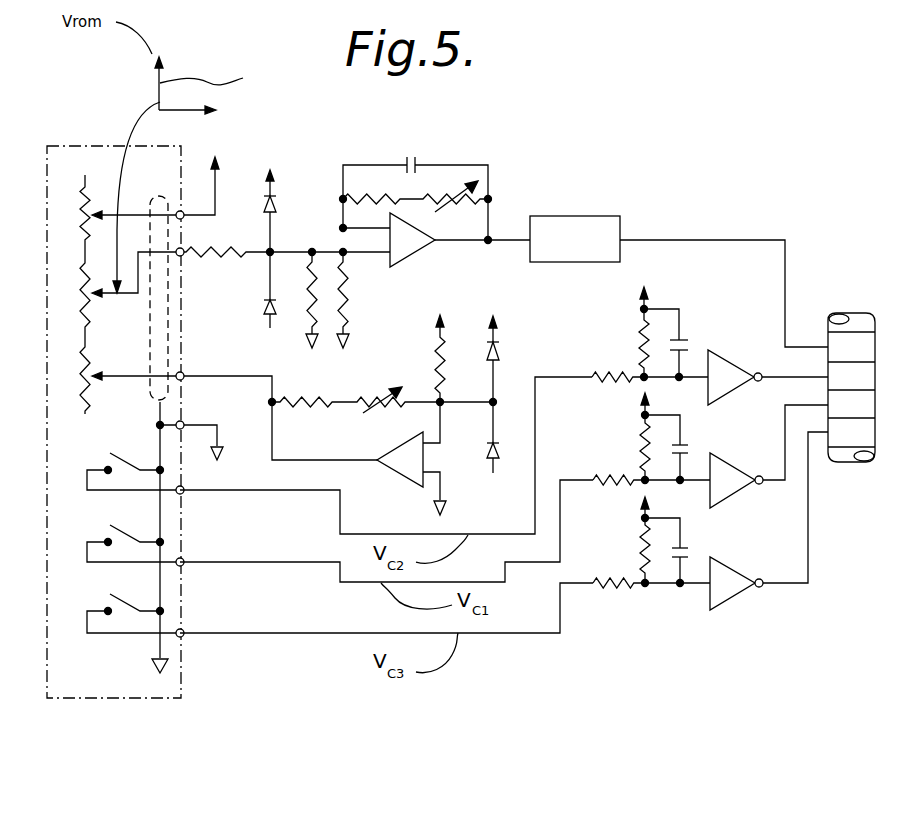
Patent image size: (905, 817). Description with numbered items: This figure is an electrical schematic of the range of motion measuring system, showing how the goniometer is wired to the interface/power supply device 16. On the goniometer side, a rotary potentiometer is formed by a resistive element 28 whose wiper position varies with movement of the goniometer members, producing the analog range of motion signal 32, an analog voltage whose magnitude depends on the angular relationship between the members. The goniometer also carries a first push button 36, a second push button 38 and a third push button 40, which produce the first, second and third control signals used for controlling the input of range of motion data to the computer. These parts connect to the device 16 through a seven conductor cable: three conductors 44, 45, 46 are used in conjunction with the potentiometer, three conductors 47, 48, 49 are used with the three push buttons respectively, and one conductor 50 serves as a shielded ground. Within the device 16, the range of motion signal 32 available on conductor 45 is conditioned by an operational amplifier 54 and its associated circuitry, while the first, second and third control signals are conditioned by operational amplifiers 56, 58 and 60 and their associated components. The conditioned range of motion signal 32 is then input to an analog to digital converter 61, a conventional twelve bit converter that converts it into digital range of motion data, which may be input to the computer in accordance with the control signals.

The interface/power supply device 16 is at (585, 725).
The resistive element 28 is at (92, 293).
The analog range of motion signal Vrom 32 is at (200, 78).
The first push button 36 is at (125, 532).
The second push button 38 is at (118, 457).
The third push button 40 is at (122, 602).
The conductor 44 is at (183, 212).
The conductor 45 is at (183, 256).
The conductor 46 is at (197, 376).
The conductor 47 is at (184, 566).
The conductor 48 is at (184, 493).
The conductor 49 is at (184, 638).
The conductor 50 is at (184, 423).
The operational amplifier 54 is at (421, 255).
The operational amplifier 56 is at (737, 469).
The operational amplifier 58 is at (733, 362).
The operational amplifier 60 is at (740, 574).
The analog to digital converter 61 is at (572, 216).